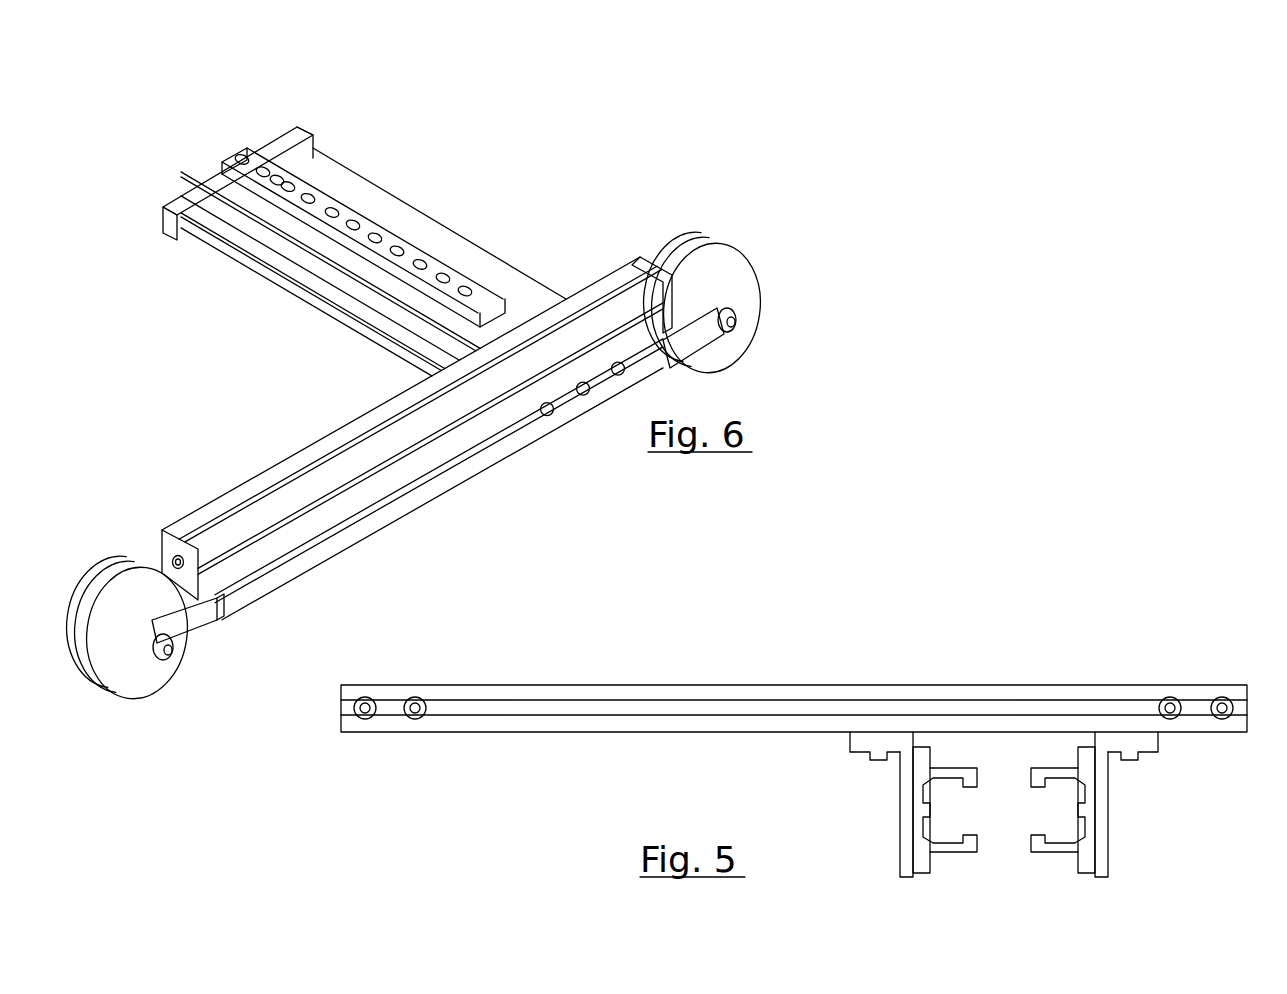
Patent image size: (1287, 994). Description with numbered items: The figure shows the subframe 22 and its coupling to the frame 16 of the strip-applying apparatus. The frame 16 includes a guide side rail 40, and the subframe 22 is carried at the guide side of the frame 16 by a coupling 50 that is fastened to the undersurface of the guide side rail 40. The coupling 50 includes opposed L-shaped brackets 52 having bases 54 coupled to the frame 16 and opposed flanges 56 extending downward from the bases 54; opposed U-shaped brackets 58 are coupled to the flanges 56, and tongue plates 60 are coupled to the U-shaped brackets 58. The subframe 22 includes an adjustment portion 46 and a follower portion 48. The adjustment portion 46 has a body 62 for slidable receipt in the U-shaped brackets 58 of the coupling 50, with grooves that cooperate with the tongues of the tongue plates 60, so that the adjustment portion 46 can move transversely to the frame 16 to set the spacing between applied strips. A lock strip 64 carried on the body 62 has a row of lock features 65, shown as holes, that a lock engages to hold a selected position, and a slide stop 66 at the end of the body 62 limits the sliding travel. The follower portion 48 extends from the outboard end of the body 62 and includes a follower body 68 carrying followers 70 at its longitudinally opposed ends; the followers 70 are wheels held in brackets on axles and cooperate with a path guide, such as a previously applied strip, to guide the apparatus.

In FIG. 5, the frame 16 is at (482, 663).
In FIG. 6, the subframe 22 is at (705, 110).
In FIG. 5, the guide side rail 40 is at (728, 722).
In FIG. 6, the adjustment portion 46 is at (232, 312).
In FIG. 6, the follower portion 48 is at (378, 540).
In FIG. 5, the coupling 50 is at (992, 852).
In FIG. 5, the L-shaped brackets 52 is at (886, 789).
In FIG. 5, the bases 54 is at (855, 740).
In FIG. 5, the flanges 56 is at (906, 852).
In FIG. 5, the U-shaped brackets 58 is at (923, 852).
In FIG. 5, the tongue plates 60 is at (1065, 812).
In FIG. 6, the body 62 is at (372, 318).
In FIG. 6, the lock strip 64 is at (441, 256).
In FIG. 6, the lock features 65 is at (310, 198).
In FIG. 6, the slide stop 66 is at (170, 211).
In FIG. 6, the follower body 68 is at (460, 472).
In FIG. 6, the followers 70 is at (768, 320).